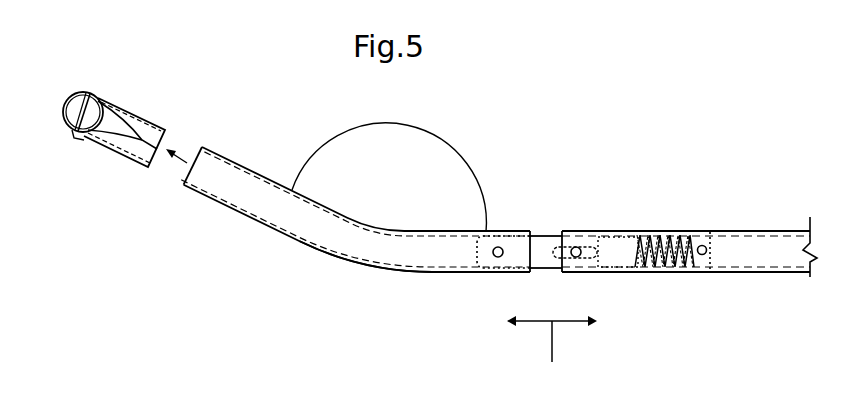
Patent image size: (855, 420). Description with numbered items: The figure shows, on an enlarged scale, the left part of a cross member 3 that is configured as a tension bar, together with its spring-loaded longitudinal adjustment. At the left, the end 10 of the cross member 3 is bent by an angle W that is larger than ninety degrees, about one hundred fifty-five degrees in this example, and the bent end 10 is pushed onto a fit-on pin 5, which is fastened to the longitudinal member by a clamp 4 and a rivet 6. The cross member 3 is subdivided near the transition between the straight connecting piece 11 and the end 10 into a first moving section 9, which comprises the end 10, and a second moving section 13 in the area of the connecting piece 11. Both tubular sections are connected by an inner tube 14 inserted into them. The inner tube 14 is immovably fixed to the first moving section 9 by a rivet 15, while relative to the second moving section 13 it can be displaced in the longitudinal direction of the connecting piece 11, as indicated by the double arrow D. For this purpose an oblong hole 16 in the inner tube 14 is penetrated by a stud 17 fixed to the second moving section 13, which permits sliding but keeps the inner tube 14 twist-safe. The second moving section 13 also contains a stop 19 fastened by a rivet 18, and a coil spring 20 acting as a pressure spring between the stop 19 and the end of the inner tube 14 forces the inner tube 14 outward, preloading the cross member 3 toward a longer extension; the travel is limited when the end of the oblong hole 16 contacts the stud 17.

The cross member 3 is at (508, 218).
The clamp 4 is at (103, 101).
The fit-on pin 5 is at (145, 131).
The rivet 6 is at (90, 92).
The first moving section 9 is at (388, 273).
The end 10 is at (237, 180).
The connecting piece 11 is at (726, 243).
The second moving section 13 is at (748, 273).
The inner tube 14 is at (545, 237).
The rivet 15 is at (497, 257).
The oblong hole 16 is at (607, 228).
The stud 17 is at (577, 257).
The rivet 18 is at (700, 246).
The stop 19 is at (702, 256).
The coil spring 20 is at (668, 268).
The angle W is at (389, 177).
The double arrow D is at (552, 356).